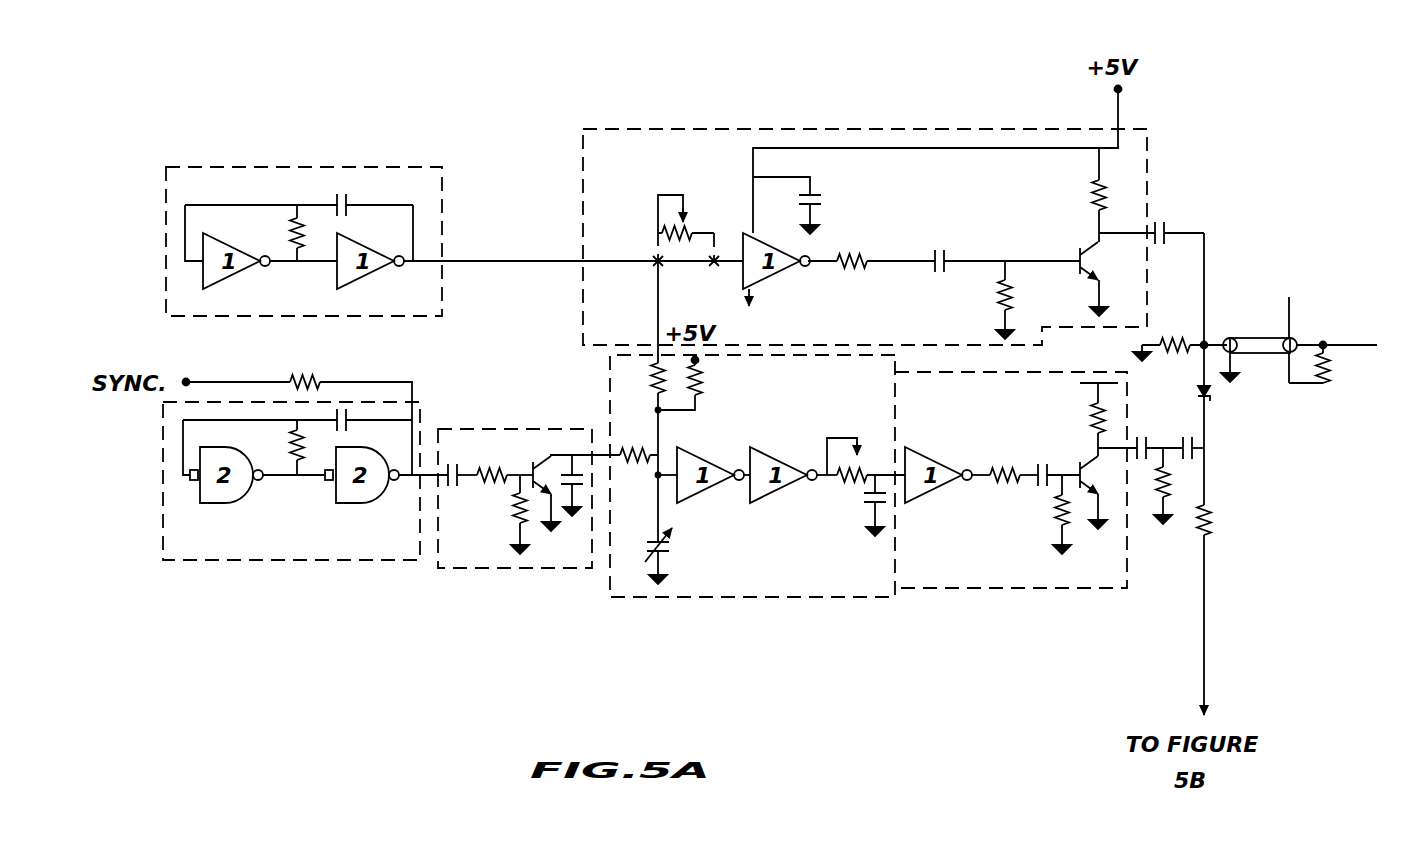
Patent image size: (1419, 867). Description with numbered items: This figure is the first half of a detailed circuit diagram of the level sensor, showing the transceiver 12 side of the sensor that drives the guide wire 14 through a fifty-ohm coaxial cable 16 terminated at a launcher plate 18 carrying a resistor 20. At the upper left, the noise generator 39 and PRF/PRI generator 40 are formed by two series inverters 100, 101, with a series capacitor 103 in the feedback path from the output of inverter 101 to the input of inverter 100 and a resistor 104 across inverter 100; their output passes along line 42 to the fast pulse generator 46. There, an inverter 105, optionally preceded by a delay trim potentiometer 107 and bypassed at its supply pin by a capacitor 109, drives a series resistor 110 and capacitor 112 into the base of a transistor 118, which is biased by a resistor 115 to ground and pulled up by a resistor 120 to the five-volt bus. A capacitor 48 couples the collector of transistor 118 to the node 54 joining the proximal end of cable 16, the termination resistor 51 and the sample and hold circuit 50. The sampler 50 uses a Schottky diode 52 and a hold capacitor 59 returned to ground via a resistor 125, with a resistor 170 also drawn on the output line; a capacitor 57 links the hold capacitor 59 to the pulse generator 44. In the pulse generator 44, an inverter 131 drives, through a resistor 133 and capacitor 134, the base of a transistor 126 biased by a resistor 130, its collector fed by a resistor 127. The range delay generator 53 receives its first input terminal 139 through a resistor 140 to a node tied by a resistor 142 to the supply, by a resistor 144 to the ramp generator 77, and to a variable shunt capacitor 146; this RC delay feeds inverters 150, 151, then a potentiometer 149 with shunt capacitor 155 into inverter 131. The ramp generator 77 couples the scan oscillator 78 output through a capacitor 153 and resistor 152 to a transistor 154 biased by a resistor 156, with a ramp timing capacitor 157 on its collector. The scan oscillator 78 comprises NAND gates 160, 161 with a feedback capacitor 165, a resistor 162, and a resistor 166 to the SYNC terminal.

The transceiver 12 is at (573, 108).
The guide wire 14 is at (1367, 350).
The cable 16 is at (1265, 338).
The launcher plate 18 is at (1293, 315).
The resistor 20 is at (1330, 365).
The noise generator 39 is at (304, 194).
The PRF/PRI generator 40 is at (233, 177).
The clock line 42 is at (505, 245).
The pulse generator 44 is at (576, 347).
The fast pulse generator 46 is at (965, 140).
The capacitor 48 is at (1162, 223).
The sample and hold circuit 50 is at (1300, 483).
The termination resistor 51 is at (1170, 335).
The Schottky diode 52 is at (1215, 392).
The range delay generator 53 is at (750, 580).
The node 54 is at (1206, 335).
The capacitor 57 is at (1140, 440).
The hold capacitor 59 is at (1190, 437).
The ramp generator 77 is at (467, 558).
The 40 Hz scan oscillator 78 is at (180, 525).
The inverter 100 is at (210, 277).
The inverter 101 is at (347, 278).
The series capacitor 103 is at (341, 195).
The resistor 104 is at (292, 228).
The inverter 105 is at (745, 266).
The delay trim potentiometer 107 is at (688, 228).
The bypass capacitor 109 is at (820, 200).
The resistor 110 is at (850, 248).
The capacitor 112 is at (938, 245).
The resistor 115 is at (1000, 292).
The transistor 118 is at (1090, 245).
The resistor 120 is at (1105, 180).
The resistor 125 is at (1158, 492).
The transistor 126 is at (1090, 462).
The resistor 127 is at (1105, 412).
The bias resistor 130 is at (1055, 505).
The inverter 131 is at (913, 460).
The resistor 133 is at (1005, 490).
The capacitor 134 is at (1045, 465).
The first input terminal 139 is at (653, 283).
The resistor 140 is at (655, 377).
The resistor 142 is at (703, 393).
The resistor 144 is at (626, 452).
The variable shunt capacitor 146 is at (648, 545).
The potentiometer 149 is at (848, 437).
The first inverter 150 is at (685, 450).
The second inverter 151 is at (760, 452).
The resistor 152 is at (490, 465).
The capacitor 153 is at (455, 465).
The transistor 154 is at (548, 446).
The shunt capacitor 155 is at (865, 497).
The bias resistor 156 is at (515, 505).
The ramp timing capacitor 157 is at (570, 458).
The NAND gate 160 is at (243, 468).
The NAND gate 161 is at (380, 468).
The resistor 162 is at (285, 462).
The capacitor 165 is at (340, 405).
The resistor 166 is at (308, 380).
The resistor 170 is at (1212, 515).